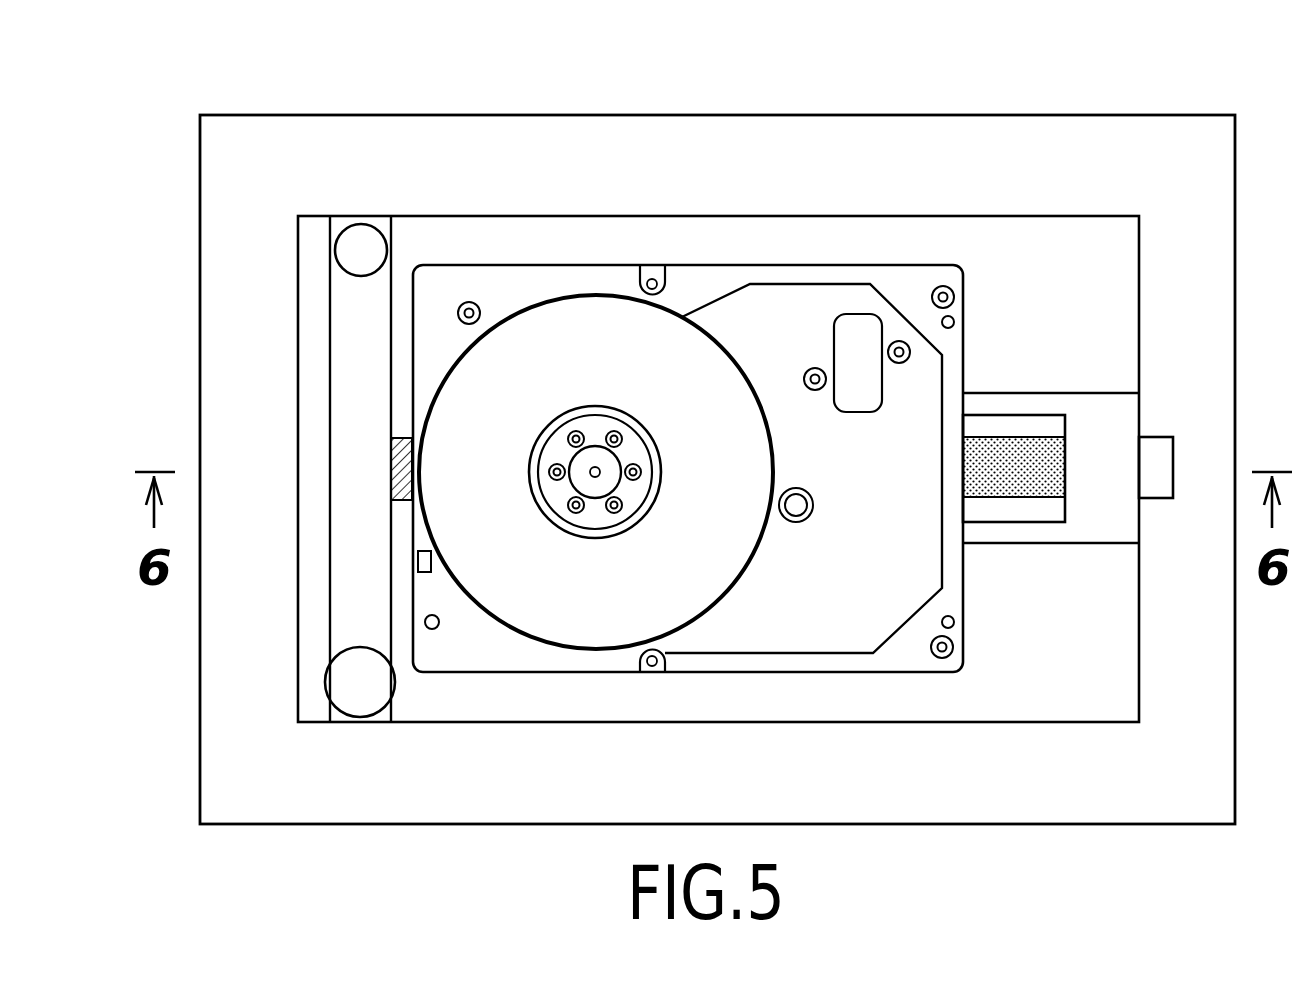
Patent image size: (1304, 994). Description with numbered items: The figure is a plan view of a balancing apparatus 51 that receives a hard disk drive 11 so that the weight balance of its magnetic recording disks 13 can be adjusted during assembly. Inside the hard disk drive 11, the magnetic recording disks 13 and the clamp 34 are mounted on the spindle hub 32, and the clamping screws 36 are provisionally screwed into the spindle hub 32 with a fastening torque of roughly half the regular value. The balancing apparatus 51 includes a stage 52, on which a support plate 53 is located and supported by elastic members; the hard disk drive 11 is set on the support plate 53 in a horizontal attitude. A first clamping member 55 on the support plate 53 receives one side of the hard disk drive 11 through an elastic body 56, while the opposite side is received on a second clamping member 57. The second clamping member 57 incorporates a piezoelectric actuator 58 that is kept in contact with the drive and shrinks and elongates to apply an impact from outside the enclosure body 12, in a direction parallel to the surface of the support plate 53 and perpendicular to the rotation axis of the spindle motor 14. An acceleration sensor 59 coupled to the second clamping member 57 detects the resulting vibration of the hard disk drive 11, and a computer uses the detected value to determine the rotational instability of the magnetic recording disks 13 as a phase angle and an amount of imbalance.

The hard disk drive 11 is at (528, 265).
The enclosure body 12 is at (980, 263).
The magnetic recording disks 13 is at (742, 568).
The spindle motor 14 is at (592, 380).
The spindle hub 32 is at (575, 492).
The clamp 34 is at (613, 538).
The clamping screws 36 is at (560, 427).
The balancing apparatus 51 is at (213, 82).
The stage 52 is at (200, 185).
The support plate 53 is at (298, 265).
The first clamping member 55 is at (328, 218).
The elastic body 56 is at (392, 503).
The second clamping member 57 is at (1055, 393).
The piezoelectric actuator 58 is at (1019, 500).
The acceleration sensor 59 is at (1167, 437).